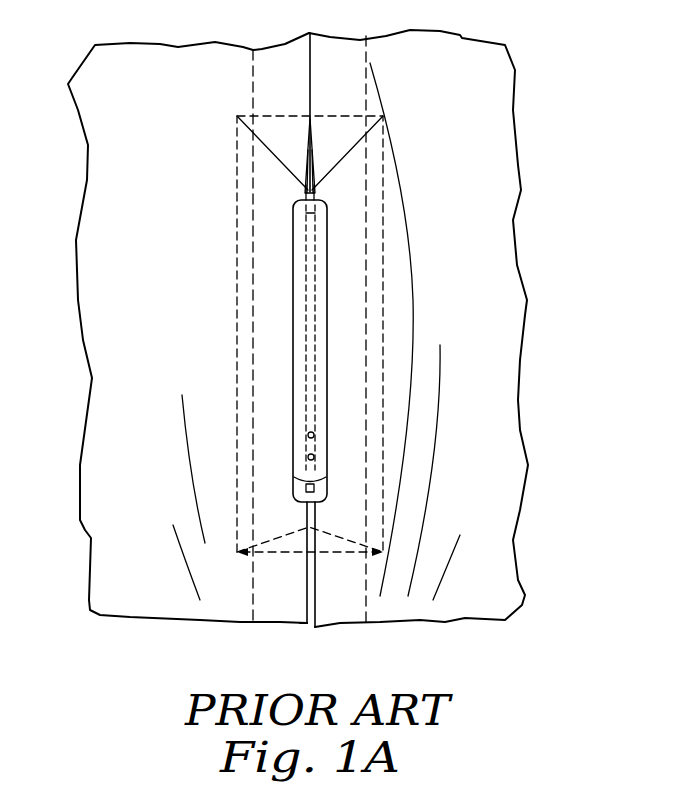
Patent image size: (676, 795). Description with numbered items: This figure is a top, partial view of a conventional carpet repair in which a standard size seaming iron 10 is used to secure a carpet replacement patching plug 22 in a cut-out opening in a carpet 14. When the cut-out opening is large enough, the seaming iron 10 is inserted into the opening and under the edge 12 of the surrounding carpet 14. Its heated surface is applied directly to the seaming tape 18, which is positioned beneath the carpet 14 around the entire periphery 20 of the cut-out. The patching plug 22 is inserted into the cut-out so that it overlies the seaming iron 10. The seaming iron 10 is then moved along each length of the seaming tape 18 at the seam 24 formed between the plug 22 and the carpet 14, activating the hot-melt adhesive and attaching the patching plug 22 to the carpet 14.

The seaming iron 10 is at (385, 190).
The edge 12 is at (318, 612).
The carpet 14 is at (480, 595).
The seaming tape 18 is at (345, 323).
The periphery 20 is at (307, 602).
The patching plug 22 is at (124, 495).
The seam 24 is at (338, 79).